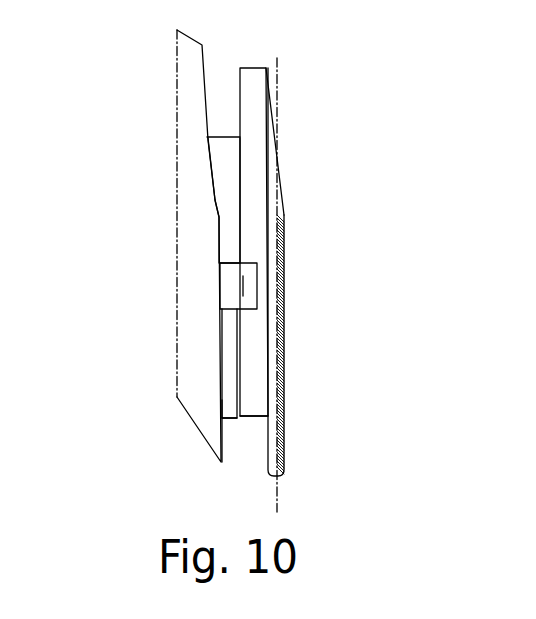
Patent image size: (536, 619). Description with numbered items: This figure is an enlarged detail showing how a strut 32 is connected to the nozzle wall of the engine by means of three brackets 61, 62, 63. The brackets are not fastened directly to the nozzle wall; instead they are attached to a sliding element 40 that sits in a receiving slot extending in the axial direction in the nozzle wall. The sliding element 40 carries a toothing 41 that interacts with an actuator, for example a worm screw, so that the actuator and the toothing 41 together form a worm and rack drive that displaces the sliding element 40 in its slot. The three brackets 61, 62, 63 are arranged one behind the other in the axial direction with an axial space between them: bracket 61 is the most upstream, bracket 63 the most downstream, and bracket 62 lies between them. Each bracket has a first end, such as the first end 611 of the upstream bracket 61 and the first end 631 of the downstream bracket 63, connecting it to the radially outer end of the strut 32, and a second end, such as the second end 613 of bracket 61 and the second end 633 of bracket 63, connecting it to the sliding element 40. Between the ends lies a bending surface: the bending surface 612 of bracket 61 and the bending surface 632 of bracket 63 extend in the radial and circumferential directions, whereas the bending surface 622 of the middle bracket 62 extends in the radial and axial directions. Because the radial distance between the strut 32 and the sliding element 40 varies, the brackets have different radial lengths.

The strut 32 is at (212, 203).
The sliding element 40 is at (274, 322).
The toothing 41 is at (286, 250).
The bracket 61 is at (240, 418).
The first end 611 is at (222, 405).
The bending surface 612 is at (237, 420).
The second end 613 is at (242, 398).
The bracket 62 is at (220, 262).
The bending surface 622 is at (243, 283).
The bracket 63 is at (241, 124).
The first end 631 is at (207, 138).
The bending surface 632 is at (218, 137).
The second end 633 is at (262, 150).